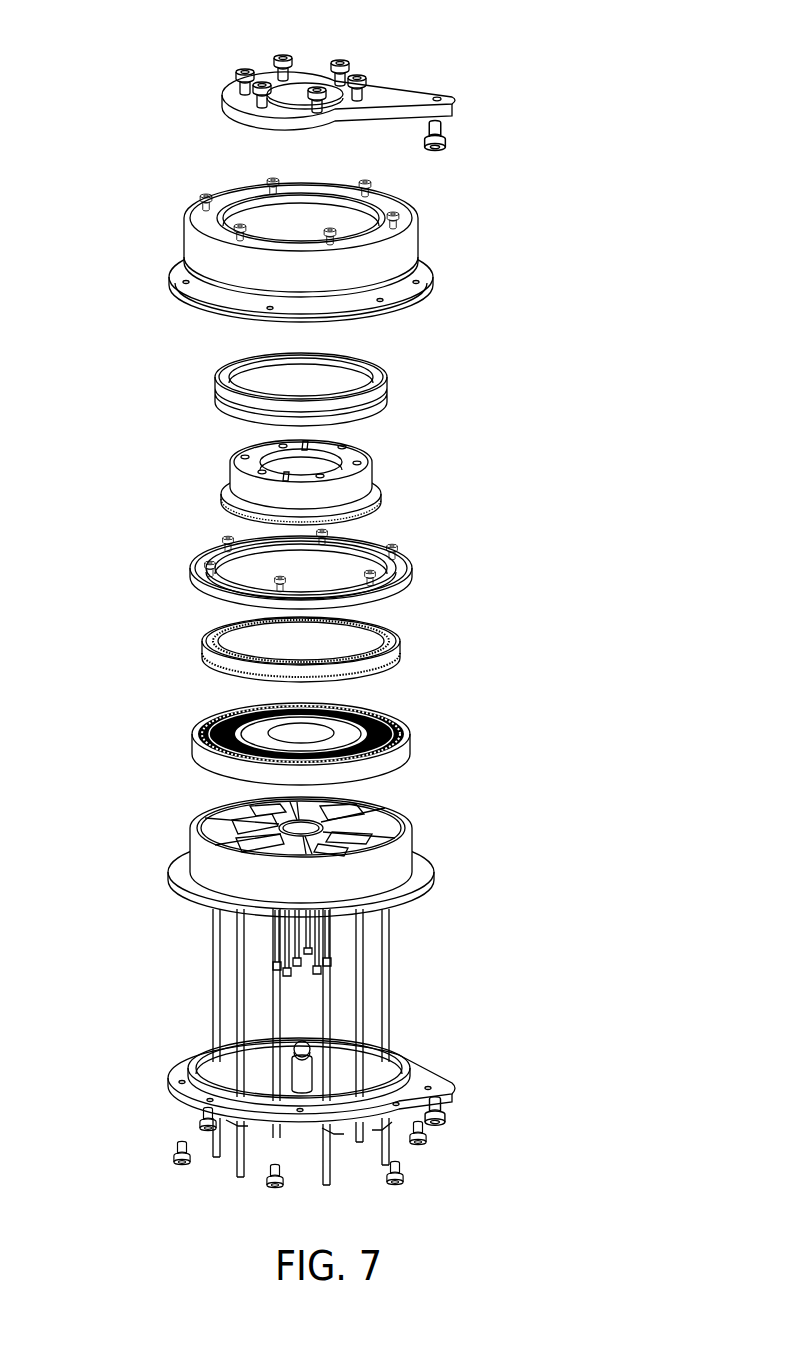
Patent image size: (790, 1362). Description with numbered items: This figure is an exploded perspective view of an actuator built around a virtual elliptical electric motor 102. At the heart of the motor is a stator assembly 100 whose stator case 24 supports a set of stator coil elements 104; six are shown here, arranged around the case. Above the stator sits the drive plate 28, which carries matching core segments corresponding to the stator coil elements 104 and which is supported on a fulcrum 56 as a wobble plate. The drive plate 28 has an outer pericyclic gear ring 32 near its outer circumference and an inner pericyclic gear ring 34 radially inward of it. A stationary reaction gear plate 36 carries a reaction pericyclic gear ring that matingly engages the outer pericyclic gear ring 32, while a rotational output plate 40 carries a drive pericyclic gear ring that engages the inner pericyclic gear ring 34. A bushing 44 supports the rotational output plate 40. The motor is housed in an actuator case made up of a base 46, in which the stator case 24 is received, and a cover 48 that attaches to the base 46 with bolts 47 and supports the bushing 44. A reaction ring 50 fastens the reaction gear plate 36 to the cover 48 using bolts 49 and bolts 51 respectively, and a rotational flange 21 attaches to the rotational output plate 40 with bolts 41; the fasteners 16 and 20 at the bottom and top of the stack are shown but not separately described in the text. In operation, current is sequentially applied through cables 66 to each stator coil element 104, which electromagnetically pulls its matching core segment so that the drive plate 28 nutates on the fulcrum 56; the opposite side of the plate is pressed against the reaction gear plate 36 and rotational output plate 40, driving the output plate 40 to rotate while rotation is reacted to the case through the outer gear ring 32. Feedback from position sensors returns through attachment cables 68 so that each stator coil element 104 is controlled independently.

The screw 16 is at (448, 1126).
The screw 20 is at (448, 140).
The rotational flange 21 is at (418, 84).
The stator case 24 is at (436, 873).
The drive plate 28 is at (314, 740).
The outer pericyclic gear ring 32 is at (392, 725).
The inner pericyclic gear ring 34 is at (227, 728).
The reaction gear plate 36 is at (333, 649).
The rotational output plate 40 is at (380, 469).
The bolts 41 is at (248, 70).
The bushing 44 is at (398, 393).
The base 46 is at (408, 1058).
The bolts 47 is at (406, 1176).
The cover 48 is at (424, 243).
The bolts 49 is at (224, 536).
The reaction ring 50 is at (418, 575).
The bolts 51 is at (207, 192).
The fulcrum 56 is at (296, 1072).
The cables 66 is at (391, 958).
The attachment cables 68 is at (311, 976).
The stator assembly 100 is at (281, 855).
The electric motor 102 is at (388, 517).
The stator coil elements 104 is at (390, 824).